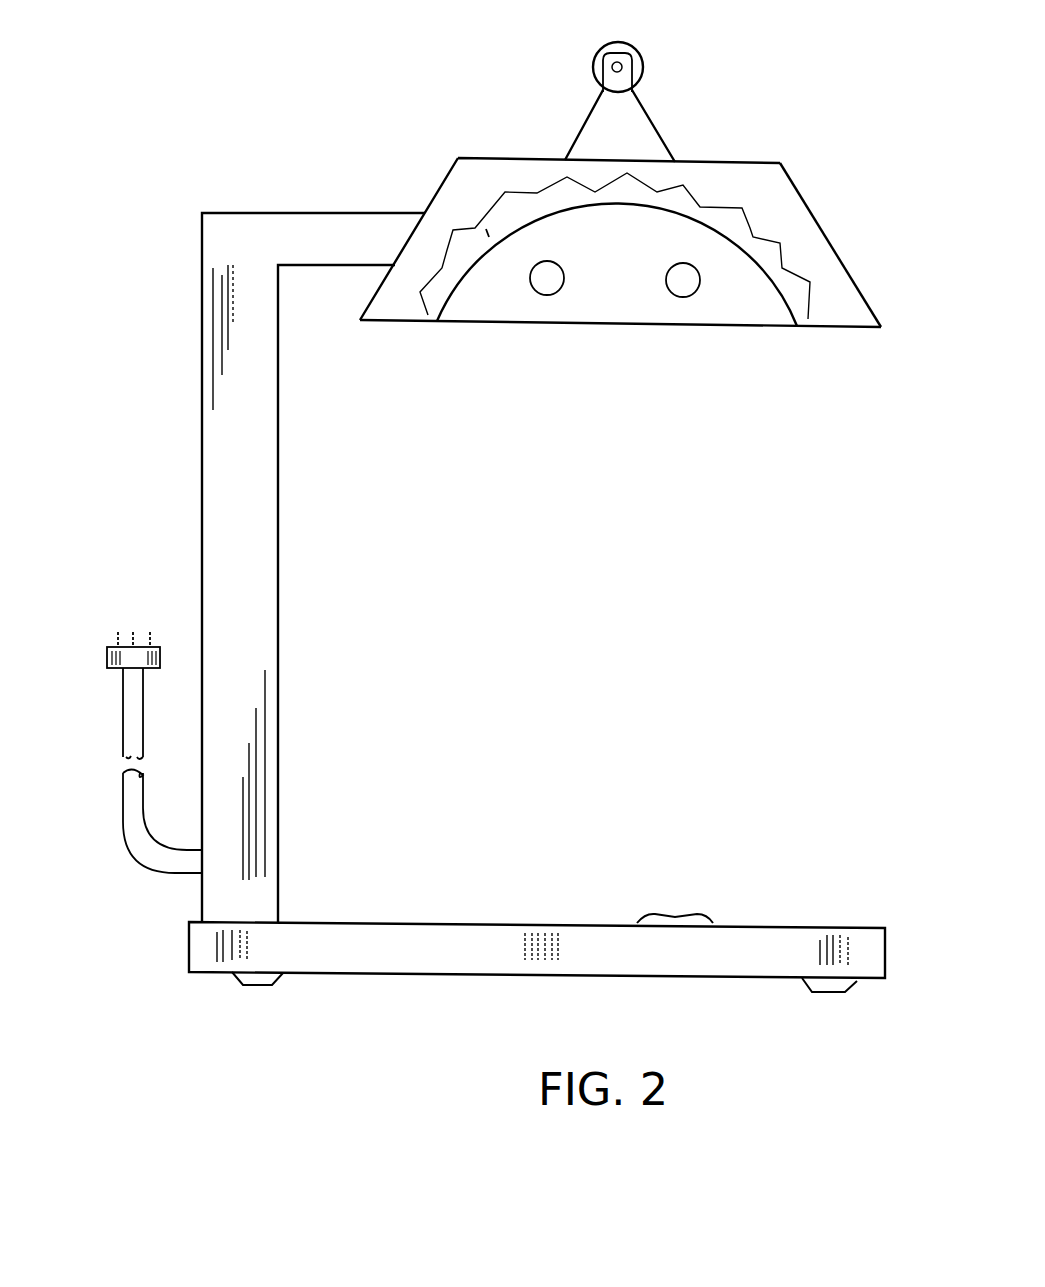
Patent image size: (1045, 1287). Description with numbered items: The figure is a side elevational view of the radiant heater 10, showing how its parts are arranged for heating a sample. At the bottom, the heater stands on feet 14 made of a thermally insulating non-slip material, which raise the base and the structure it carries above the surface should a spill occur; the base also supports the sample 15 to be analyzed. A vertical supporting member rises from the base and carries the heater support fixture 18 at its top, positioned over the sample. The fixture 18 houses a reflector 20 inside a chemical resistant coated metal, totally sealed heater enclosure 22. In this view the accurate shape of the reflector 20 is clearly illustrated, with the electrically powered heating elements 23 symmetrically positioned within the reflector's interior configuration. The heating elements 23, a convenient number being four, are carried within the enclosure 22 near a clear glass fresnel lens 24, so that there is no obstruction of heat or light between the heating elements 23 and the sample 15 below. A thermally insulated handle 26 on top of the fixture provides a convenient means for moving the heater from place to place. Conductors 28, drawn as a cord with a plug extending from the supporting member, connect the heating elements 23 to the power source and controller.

The radiant heater 10 is at (193, 207).
The feet 14 is at (837, 993).
The sample 15 is at (683, 912).
The heater support fixture 18 is at (757, 138).
The reflector 20 is at (723, 237).
The heater enclosure 22 is at (870, 303).
The heating elements 23 is at (547, 295).
The fresnel lens 24 is at (737, 327).
The handle 26 is at (640, 58).
The conductors 28 is at (133, 855).